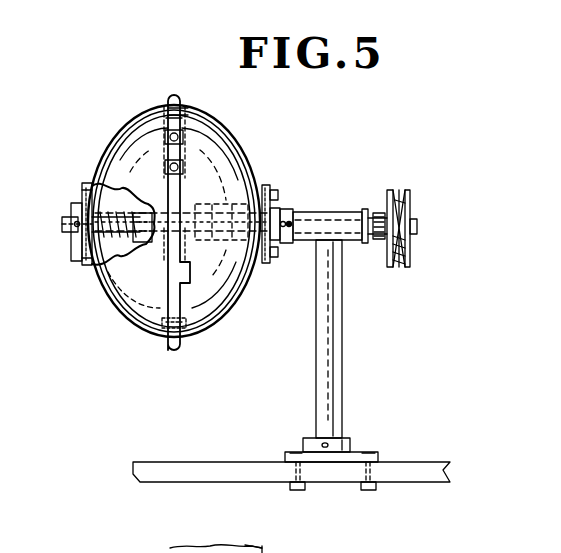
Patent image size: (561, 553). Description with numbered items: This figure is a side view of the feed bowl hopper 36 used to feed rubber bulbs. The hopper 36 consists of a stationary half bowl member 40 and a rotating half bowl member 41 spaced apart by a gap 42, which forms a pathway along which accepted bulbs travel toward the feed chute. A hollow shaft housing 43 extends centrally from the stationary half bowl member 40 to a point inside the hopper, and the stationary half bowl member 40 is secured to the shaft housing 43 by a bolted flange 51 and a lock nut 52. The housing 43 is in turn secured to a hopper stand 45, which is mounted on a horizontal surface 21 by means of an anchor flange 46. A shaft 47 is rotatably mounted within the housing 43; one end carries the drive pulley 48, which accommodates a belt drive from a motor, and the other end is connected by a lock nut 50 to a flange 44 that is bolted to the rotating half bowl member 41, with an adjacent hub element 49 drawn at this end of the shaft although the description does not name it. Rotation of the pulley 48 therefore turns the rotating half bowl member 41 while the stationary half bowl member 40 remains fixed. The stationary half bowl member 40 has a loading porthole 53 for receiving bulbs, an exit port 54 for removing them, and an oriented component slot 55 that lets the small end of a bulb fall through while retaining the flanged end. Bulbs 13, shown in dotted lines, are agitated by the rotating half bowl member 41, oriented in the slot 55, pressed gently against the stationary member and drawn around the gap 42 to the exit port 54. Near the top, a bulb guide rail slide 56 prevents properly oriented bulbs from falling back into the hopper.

The bulbs 13 is at (176, 95).
The horizontal surface 21 is at (400, 478).
The feed bowl hopper 36 is at (161, 100).
The stationary half bowl member 40 is at (252, 153).
The rotating half bowl member 41 is at (130, 148).
The gap 42 is at (180, 122).
The hollow shaft housing 43 is at (285, 195).
The flange 44 is at (82, 192).
The hopper stand 45 is at (340, 360).
The anchor flange 46 is at (356, 456).
The shaft 47 is at (338, 222).
The drive pulley 48 is at (412, 190).
The hub block 49 is at (72, 262).
The lock nut 50 is at (70, 236).
The bolted flange 51 is at (270, 186).
The lock nut 52 is at (289, 228).
The loading porthole 53 is at (248, 156).
The exit port 54 is at (192, 283).
The oriented component slot 55 is at (183, 335).
The bulb guide rail slide 56 is at (185, 110).